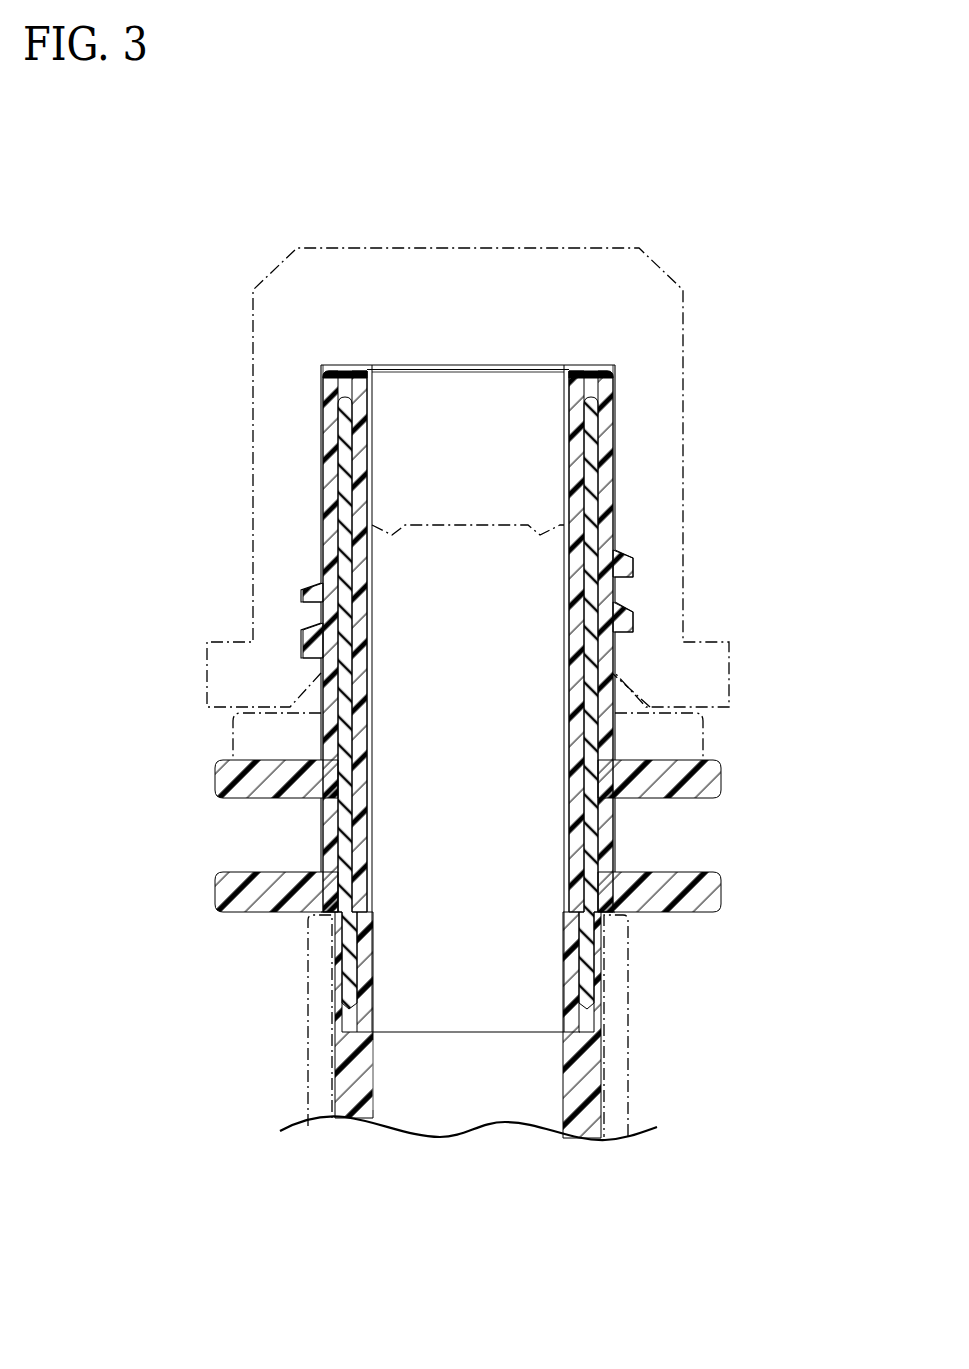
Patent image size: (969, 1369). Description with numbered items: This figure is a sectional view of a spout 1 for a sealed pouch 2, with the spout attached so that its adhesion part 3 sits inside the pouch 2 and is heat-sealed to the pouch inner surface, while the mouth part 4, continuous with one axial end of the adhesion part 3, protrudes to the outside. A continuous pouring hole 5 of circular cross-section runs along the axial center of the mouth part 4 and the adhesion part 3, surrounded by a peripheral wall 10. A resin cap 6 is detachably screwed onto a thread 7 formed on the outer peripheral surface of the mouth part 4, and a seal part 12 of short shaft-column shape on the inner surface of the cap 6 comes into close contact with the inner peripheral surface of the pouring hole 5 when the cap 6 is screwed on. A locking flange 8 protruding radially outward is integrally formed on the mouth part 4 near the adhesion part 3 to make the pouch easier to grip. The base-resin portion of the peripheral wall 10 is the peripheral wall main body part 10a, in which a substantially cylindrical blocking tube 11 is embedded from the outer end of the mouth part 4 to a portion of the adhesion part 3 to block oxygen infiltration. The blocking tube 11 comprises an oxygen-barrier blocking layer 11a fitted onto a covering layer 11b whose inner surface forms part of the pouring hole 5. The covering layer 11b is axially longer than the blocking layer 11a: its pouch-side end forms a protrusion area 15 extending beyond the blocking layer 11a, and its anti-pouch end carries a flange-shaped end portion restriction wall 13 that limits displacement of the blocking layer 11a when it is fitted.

The spout 1 is at (634, 471).
The pouch 2 is at (628, 980).
The adhesion part 3 is at (602, 1063).
The mouth part 4 is at (610, 677).
The pouring hole 5 is at (386, 1075).
The cap 6 is at (662, 263).
The thread 7 is at (625, 553).
The locking flange 8 is at (712, 770).
The peripheral wall 10 is at (327, 527).
The peripheral wall main body part 10a is at (611, 506).
The blocking tube 11 is at (617, 423).
The blocking layer 11a is at (338, 448).
The covering layer 11b is at (357, 505).
The seal part 12 is at (475, 525).
The end portion restriction wall 13 is at (595, 382).
The protrusion area 15 is at (572, 1020).